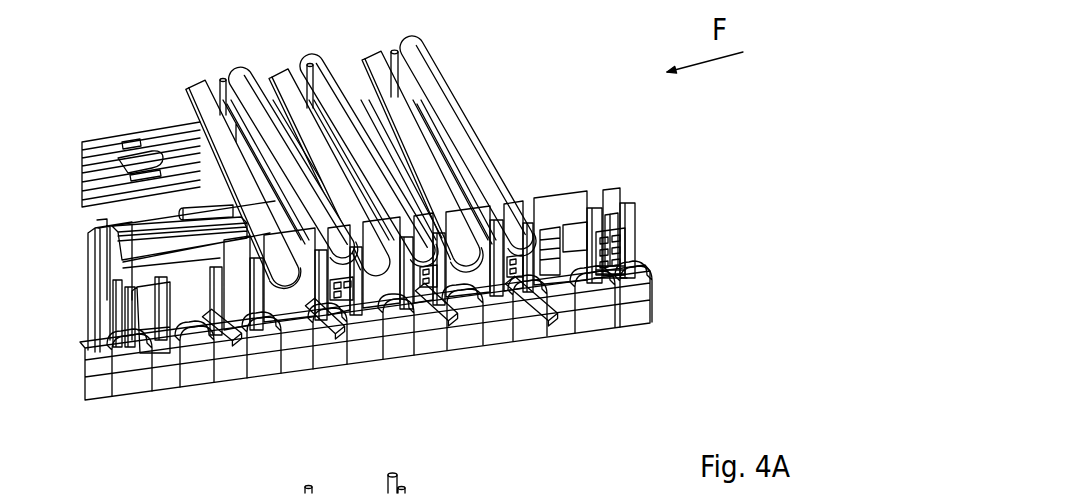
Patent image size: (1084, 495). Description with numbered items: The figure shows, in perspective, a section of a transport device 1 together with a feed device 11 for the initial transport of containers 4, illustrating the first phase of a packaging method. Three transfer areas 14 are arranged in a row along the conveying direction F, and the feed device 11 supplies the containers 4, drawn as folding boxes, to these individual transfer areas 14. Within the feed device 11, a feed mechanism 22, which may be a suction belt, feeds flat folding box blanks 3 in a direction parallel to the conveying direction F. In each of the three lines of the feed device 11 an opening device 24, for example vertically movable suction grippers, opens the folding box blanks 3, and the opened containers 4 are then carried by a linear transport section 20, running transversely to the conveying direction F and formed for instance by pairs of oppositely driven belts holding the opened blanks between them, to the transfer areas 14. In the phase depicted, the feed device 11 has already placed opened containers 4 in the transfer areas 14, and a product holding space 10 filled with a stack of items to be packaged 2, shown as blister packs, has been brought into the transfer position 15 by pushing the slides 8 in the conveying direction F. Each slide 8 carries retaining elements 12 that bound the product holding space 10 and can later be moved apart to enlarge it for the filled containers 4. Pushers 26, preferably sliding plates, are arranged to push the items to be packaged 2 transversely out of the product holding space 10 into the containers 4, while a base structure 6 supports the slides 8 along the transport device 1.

The transport device 1 is at (403, 221).
The items to be packaged 2 is at (623, 260).
The flat folding box blanks 3 is at (137, 157).
The containers 4 is at (477, 200).
The base rail 6 is at (369, 345).
The slides 8 is at (453, 345).
The product holding space 10 is at (628, 217).
The feed device 11 is at (359, 143).
The retaining elements 12 is at (620, 205).
The transfer areas 14 is at (403, 253).
The transfer position 15 is at (530, 320).
The linear transport section 20 is at (433, 130).
The feed mechanism 22 is at (93, 172).
The opening device 24 is at (221, 88).
The pushers 26 is at (540, 307).